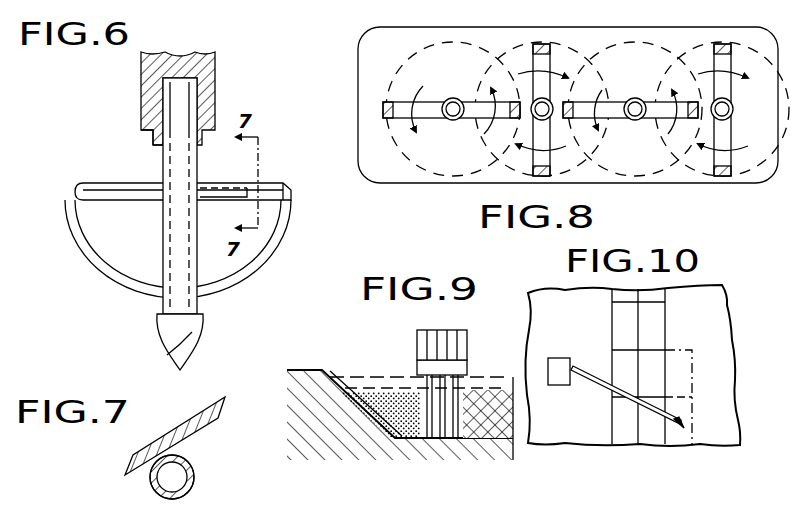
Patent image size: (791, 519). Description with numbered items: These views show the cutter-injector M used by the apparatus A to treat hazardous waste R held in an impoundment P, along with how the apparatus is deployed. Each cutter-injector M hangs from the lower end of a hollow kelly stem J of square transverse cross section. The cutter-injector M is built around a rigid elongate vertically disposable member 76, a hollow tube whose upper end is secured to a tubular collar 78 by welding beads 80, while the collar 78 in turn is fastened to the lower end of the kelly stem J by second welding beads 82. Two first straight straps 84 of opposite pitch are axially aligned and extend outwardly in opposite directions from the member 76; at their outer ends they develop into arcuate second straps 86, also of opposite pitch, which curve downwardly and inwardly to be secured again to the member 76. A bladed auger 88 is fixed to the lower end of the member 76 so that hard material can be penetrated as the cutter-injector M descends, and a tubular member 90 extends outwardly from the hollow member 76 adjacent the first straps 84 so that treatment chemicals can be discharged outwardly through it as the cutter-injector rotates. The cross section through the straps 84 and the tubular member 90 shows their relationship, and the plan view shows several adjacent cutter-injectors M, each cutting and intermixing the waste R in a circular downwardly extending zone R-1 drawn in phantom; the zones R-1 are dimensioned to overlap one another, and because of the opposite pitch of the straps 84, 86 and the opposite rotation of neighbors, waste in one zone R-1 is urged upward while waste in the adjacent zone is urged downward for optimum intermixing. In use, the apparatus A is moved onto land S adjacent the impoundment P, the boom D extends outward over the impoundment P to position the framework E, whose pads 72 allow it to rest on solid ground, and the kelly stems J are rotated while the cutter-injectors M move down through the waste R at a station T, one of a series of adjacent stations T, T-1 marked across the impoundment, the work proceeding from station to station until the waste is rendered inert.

In FIG. 6, the hollow kelly stem J is at (215, 60).
In FIG. 6, the hub body 78 is at (205, 82).
In FIG. 6, the second welding beads 82 is at (152, 136).
In FIG. 6, the welding beads 80 is at (163, 148).
In FIG. 6, the rigid elongate vertically disposable member 76 is at (194, 165).
In FIG. 8, the rigid elongate vertically disposable member 76 is at (453, 98).
In FIG. 6, the first straight straps 84 is at (272, 184).
In FIG. 7, the first straight straps 84 is at (178, 418).
In FIG. 6, the second straps 86 is at (94, 241).
In FIG. 6, the tubular member 90 is at (212, 209).
In FIG. 7, the tubular member 90 is at (194, 480).
In FIG. 6, the bladed auger 88 is at (184, 338).
In FIG. 6, the cutter-injector M is at (292, 212).
In FIG. 8, the cutter-injector M is at (428, 128).
In FIG. 8, the zone R-1 is at (412, 158).
In FIG. 9, the zone R-1 is at (490, 440).
In FIG. 9, the framework E is at (468, 336).
In FIG. 10, the framework E is at (694, 410).
In FIG. 9, the pads 72 is at (467, 384).
In FIG. 9, the hazardous waste R is at (398, 442).
In FIG. 10, the land S is at (580, 327).
In FIG. 10, the station T is at (656, 428).
In FIG. 10, the tile position T-1 is at (693, 357).
In FIG. 10, the apparatus A is at (556, 386).
In FIG. 10, the boom D is at (598, 390).
In FIG. 10, the installed unit I is at (684, 443).
In FIG. 10, the impoundment P is at (700, 446).